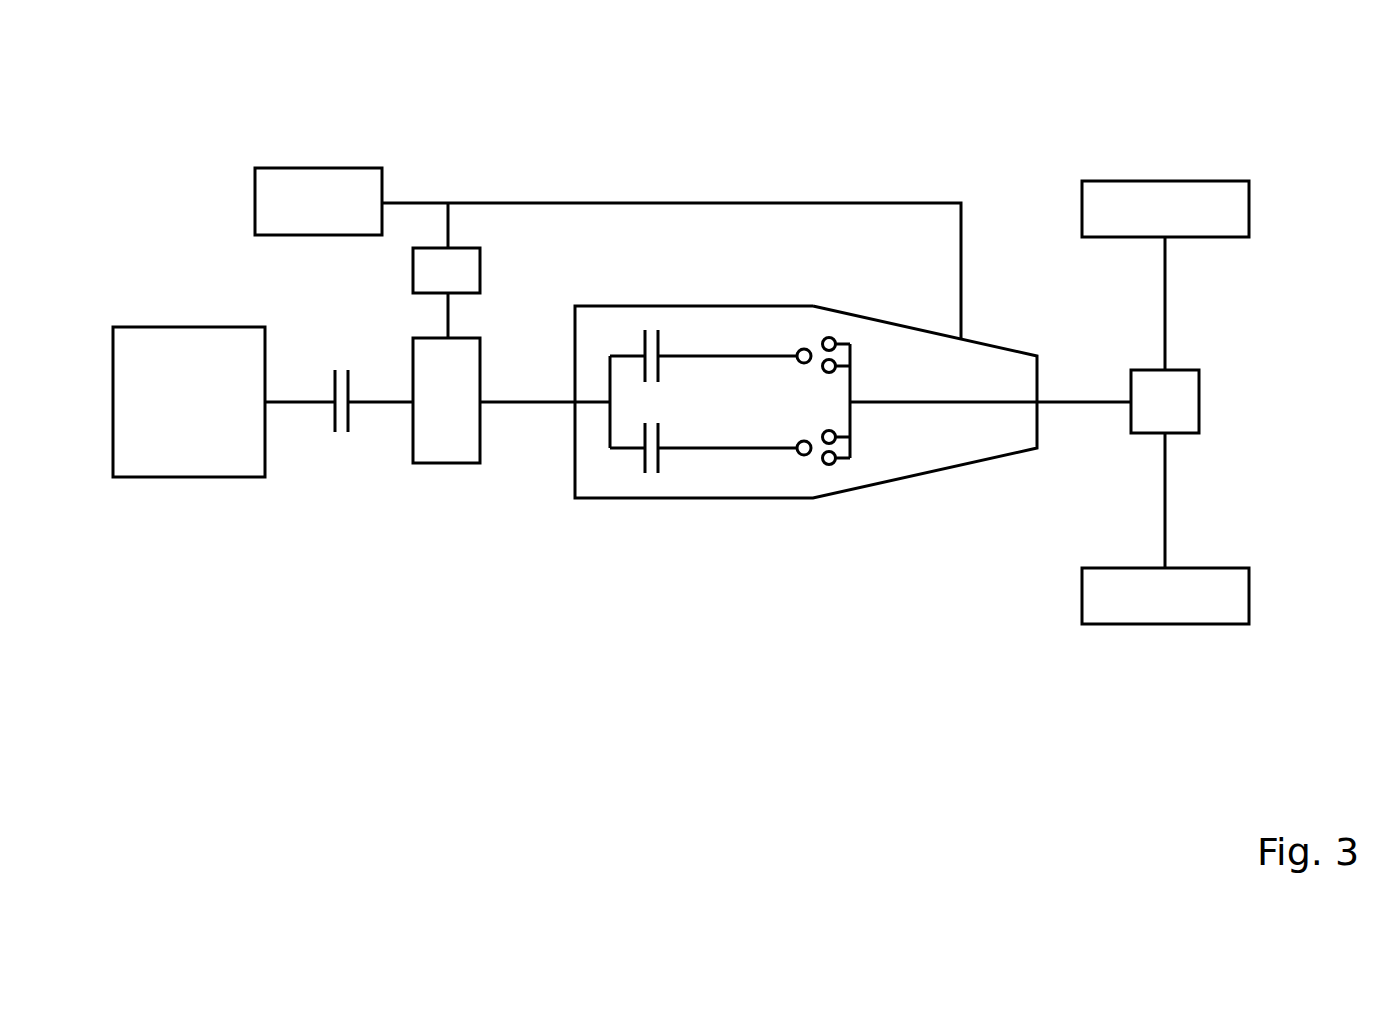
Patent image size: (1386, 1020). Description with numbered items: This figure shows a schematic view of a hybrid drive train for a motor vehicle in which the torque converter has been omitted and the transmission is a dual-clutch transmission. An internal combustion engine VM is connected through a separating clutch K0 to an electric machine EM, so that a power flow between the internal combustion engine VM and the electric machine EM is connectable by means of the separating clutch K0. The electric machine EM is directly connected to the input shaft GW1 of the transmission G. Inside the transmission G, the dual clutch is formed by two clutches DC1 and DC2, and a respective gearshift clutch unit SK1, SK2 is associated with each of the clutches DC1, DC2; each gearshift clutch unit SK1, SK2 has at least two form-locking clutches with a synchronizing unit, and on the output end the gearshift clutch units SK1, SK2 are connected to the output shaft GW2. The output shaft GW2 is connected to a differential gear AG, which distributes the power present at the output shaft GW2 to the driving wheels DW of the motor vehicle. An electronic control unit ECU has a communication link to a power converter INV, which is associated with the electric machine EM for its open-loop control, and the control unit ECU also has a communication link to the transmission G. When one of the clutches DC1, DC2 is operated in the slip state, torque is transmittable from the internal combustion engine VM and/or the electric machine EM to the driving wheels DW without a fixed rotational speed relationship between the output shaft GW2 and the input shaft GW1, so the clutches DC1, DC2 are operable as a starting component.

The electronic control unit ECU is at (352, 185).
The power converter INV is at (458, 265).
The electric machine EM is at (467, 357).
The internal combustion engine VM is at (206, 452).
The separating clutch K0 is at (340, 437).
The input shaft GW1 is at (541, 408).
The transmission G is at (857, 316).
The first clutch of the dual clutch DC1 is at (653, 326).
The second clutch of the dual clutch DC2 is at (645, 478).
The first gearshift clutch unit SK1 is at (813, 333).
The second gearshift clutch unit SK2 is at (815, 469).
The output shaft GW2 is at (1085, 403).
The differential gear AG is at (1185, 398).
The driving wheels DW is at (1133, 200).